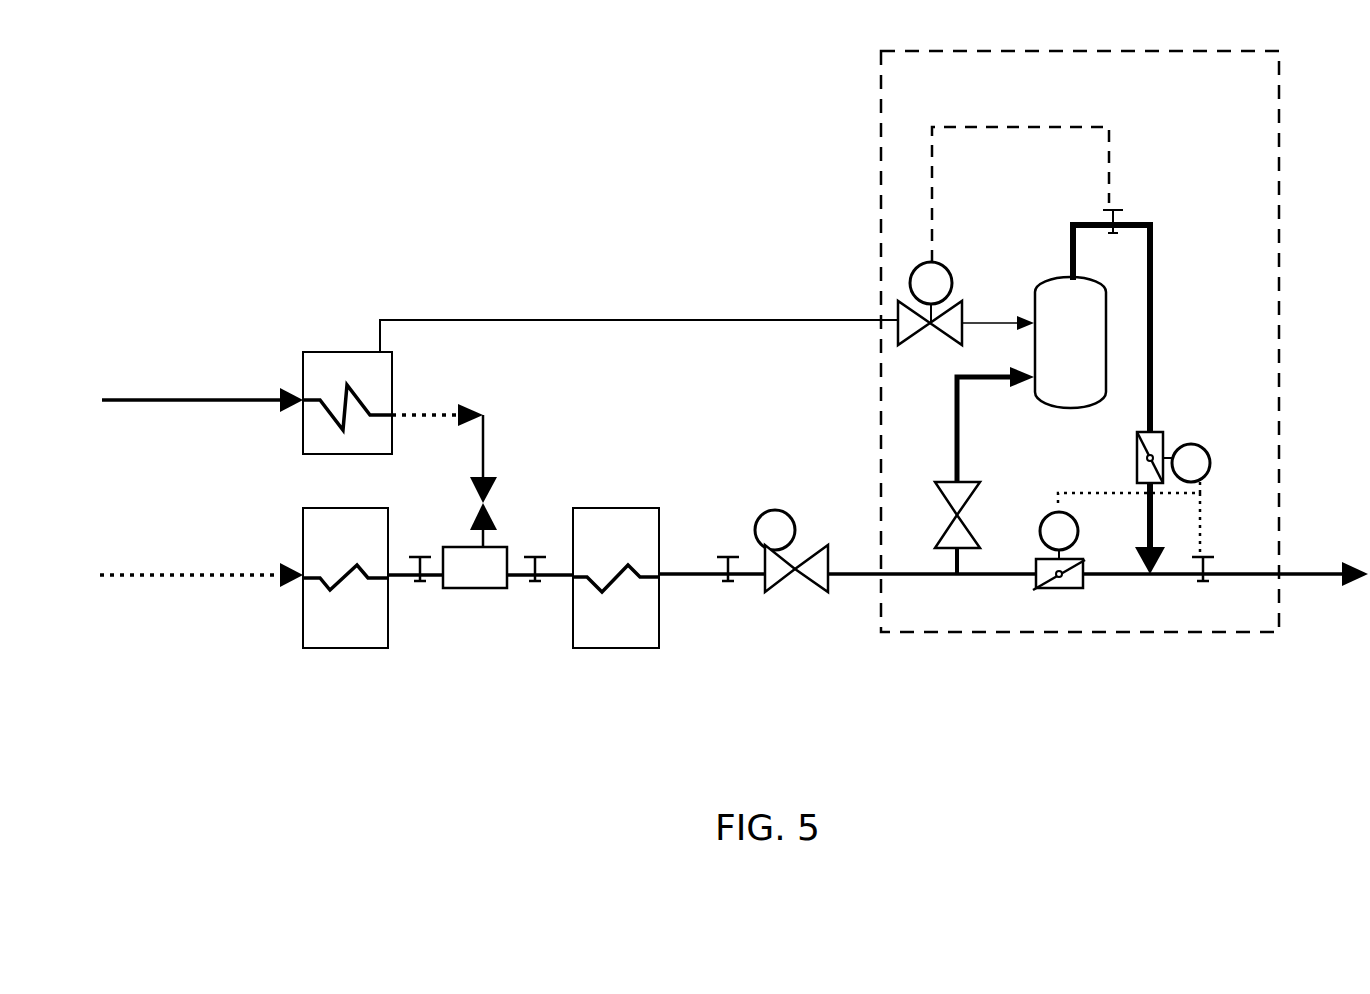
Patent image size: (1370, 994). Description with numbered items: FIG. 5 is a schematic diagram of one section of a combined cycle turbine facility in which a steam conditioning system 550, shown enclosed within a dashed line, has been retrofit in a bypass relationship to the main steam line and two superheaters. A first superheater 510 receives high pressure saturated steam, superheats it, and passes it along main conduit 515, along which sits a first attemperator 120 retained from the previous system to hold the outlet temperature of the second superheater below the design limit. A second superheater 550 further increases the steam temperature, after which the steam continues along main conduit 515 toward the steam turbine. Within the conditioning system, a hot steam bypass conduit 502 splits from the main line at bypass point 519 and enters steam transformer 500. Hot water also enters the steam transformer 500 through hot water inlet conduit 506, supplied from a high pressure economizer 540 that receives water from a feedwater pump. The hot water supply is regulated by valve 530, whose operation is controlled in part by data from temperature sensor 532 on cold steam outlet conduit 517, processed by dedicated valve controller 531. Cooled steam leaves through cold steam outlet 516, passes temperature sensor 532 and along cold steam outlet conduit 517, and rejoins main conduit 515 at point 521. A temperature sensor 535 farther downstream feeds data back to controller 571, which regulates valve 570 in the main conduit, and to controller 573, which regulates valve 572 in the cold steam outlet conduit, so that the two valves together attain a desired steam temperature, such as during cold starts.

The first attemperator 120 is at (475, 567).
The steam transformer 500 is at (1052, 287).
The hot steam bypass conduit 502 is at (971, 470).
The hot water inlet conduit 506 is at (639, 325).
The first superheater 510 is at (345, 578).
The main conduit 515 is at (407, 580).
The cold steam outlet 516 is at (1103, 290).
The cold steam outlet conduit 517 is at (1178, 323).
The bypass point 519 is at (957, 578).
The return point 521 is at (1153, 578).
The valve 530 is at (966, 335).
The dedicated valve controller 531 is at (931, 292).
The temperature sensor 532 is at (1108, 205).
The temperature sensor 535 is at (1203, 581).
The high pressure economizer 540 is at (400, 449).
The steam conditioning system 550 is at (862, 172).
The valve 570 is at (1033, 590).
The controller 571 is at (1059, 535).
The valve 572 is at (1132, 503).
The controller 573 is at (1134, 500).